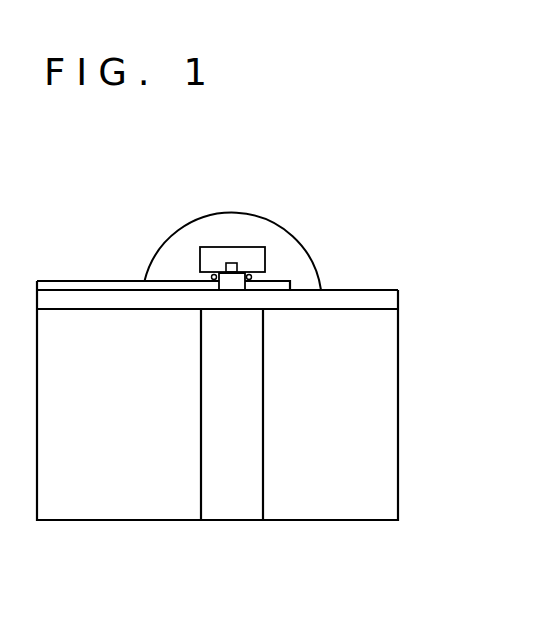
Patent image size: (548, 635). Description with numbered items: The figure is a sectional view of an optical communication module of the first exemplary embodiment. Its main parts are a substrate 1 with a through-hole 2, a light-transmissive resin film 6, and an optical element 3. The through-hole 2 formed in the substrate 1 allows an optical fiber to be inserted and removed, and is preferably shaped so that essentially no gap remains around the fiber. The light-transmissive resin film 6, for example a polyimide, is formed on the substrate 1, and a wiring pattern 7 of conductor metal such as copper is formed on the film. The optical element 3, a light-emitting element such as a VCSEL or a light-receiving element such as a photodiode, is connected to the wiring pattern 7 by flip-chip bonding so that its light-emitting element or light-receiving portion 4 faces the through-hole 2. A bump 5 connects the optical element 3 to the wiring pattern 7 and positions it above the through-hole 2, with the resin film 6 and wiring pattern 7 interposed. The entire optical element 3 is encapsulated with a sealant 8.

The substrate 1 is at (362, 502).
The through-hole 2 is at (233, 502).
The optical element 3 is at (220, 247).
The light-emitting element or light-receiving portion 4 is at (232, 263).
The bump 5 is at (257, 280).
The light-transmissive resin film 6 is at (383, 300).
The wiring pattern 7 is at (88, 281).
The sealant 8 is at (290, 227).